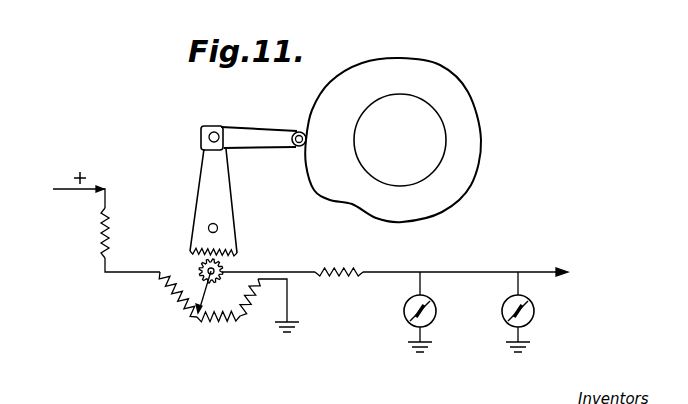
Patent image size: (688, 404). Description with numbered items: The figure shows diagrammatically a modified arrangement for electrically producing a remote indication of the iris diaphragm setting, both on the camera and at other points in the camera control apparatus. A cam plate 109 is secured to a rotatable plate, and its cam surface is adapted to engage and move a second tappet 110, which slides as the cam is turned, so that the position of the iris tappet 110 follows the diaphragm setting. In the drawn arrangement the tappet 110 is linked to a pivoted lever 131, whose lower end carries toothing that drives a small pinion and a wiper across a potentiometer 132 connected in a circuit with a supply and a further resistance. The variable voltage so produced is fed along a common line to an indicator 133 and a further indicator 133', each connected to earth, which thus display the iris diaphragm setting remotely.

The cam plate 109 is at (317, 104).
The second tappet 110 is at (252, 130).
The lever 131 is at (197, 192).
The potentiometer 132 is at (200, 327).
The indicating meter 133 is at (438, 312).
The indicating meter 133' is at (538, 312).